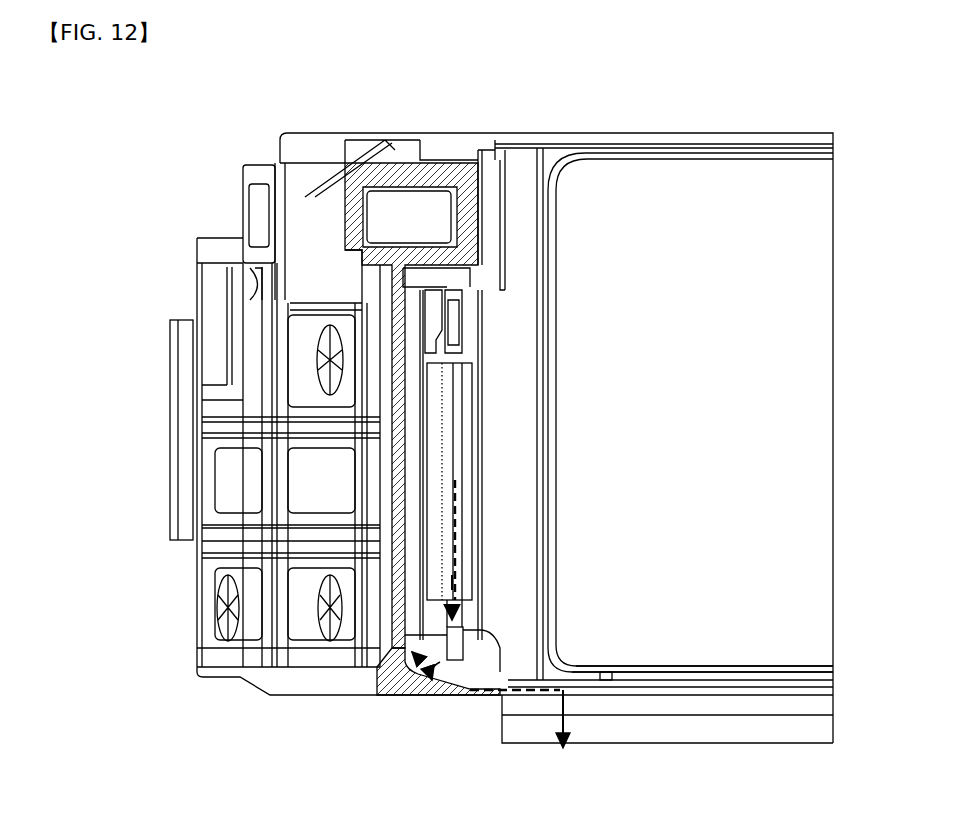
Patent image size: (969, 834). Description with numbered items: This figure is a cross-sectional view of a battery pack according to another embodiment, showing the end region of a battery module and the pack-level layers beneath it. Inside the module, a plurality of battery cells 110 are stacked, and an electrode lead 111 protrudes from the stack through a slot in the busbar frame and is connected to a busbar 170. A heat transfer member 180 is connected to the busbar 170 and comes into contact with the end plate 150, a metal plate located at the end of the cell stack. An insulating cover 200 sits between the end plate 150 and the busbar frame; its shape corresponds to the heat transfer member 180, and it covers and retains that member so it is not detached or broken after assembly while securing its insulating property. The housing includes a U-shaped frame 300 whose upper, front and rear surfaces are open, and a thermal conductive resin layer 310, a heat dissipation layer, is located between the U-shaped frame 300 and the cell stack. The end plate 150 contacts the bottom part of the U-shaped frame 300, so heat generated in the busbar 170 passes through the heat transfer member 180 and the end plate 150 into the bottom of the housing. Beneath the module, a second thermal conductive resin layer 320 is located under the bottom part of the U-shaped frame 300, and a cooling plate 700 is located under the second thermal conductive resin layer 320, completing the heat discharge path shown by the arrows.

The battery cell 110 is at (770, 303).
The electrode lead 111 is at (446, 490).
The end plate 150 is at (302, 312).
The busbar 170 is at (457, 336).
The heat transfer member 180 is at (390, 675).
The insulating cover 200 is at (396, 578).
The U-shaped frame 300 is at (820, 689).
The thermal conductive resin layer 310 is at (797, 677).
The second thermal conductive resin layer 320 is at (820, 707).
The cooling plate 700 is at (788, 732).